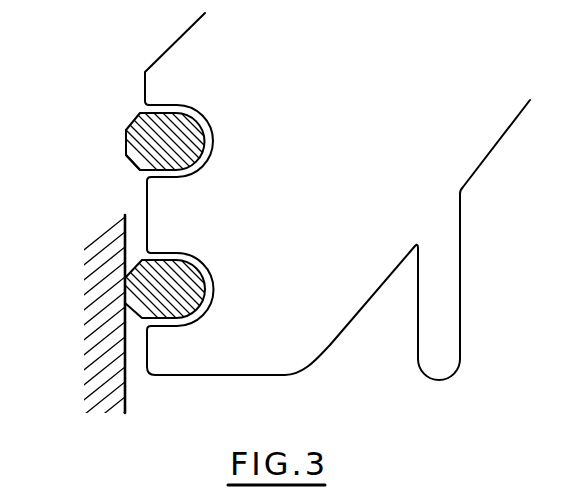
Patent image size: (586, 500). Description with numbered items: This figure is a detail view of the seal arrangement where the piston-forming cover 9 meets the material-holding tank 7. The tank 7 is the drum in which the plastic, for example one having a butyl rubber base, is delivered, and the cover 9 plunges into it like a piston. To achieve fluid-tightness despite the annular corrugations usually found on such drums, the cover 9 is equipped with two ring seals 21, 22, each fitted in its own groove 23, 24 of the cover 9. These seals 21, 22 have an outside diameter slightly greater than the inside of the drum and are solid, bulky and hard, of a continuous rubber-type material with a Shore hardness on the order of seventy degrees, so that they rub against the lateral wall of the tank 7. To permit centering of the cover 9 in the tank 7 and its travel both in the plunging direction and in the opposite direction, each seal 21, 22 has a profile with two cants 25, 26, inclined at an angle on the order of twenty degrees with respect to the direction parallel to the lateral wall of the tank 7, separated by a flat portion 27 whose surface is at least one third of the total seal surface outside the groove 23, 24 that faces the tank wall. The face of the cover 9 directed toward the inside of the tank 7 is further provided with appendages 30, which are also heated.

The tank 7 is at (107, 388).
The cover 9 is at (473, 122).
The ring seal 21 is at (167, 137).
The ring seal 22 is at (176, 303).
The groove 23 is at (213, 127).
The groove 24 is at (213, 279).
The cant 25 is at (165, 112).
The cant 26 is at (135, 166).
The flat portion 27 is at (126, 139).
The appendage 30 is at (443, 300).